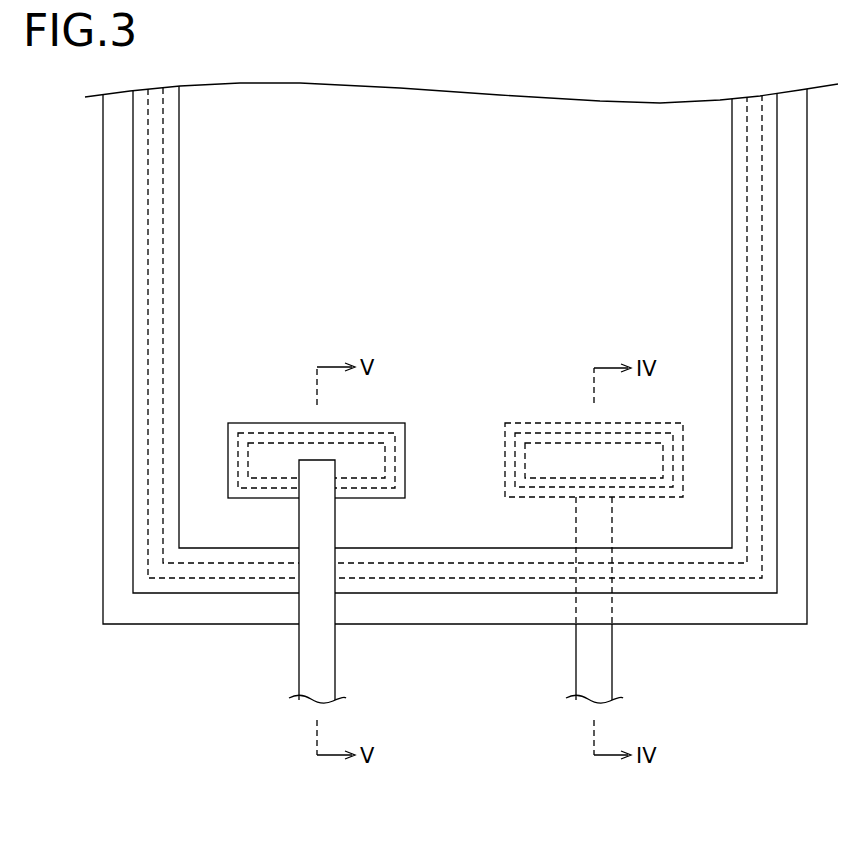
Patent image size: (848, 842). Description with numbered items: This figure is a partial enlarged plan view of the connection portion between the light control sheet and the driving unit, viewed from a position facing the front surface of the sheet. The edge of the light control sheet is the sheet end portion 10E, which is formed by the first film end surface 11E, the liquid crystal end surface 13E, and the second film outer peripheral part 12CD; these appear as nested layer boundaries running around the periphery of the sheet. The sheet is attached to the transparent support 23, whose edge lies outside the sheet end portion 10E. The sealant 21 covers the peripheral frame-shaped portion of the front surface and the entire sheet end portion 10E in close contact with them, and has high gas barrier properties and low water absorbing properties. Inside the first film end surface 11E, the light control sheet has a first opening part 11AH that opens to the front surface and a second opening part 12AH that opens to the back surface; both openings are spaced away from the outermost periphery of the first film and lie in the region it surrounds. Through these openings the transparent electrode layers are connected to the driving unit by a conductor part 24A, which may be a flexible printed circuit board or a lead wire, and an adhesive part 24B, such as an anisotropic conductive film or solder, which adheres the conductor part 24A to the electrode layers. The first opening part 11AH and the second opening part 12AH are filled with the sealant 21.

The sheet end portion 10E is at (657, 152).
The first film end surface 11E is at (747, 163).
The liquid crystal end surface 13E is at (760, 190).
The second film outer peripheral part 12CD is at (775, 218).
The transparent support 23 is at (795, 263).
The sealant 21 is at (455, 442).
The first opening part 11AH is at (515, 444).
The second opening part 12AH is at (397, 448).
The adhesive part 24B is at (520, 468).
The conductor part 24A is at (578, 662).